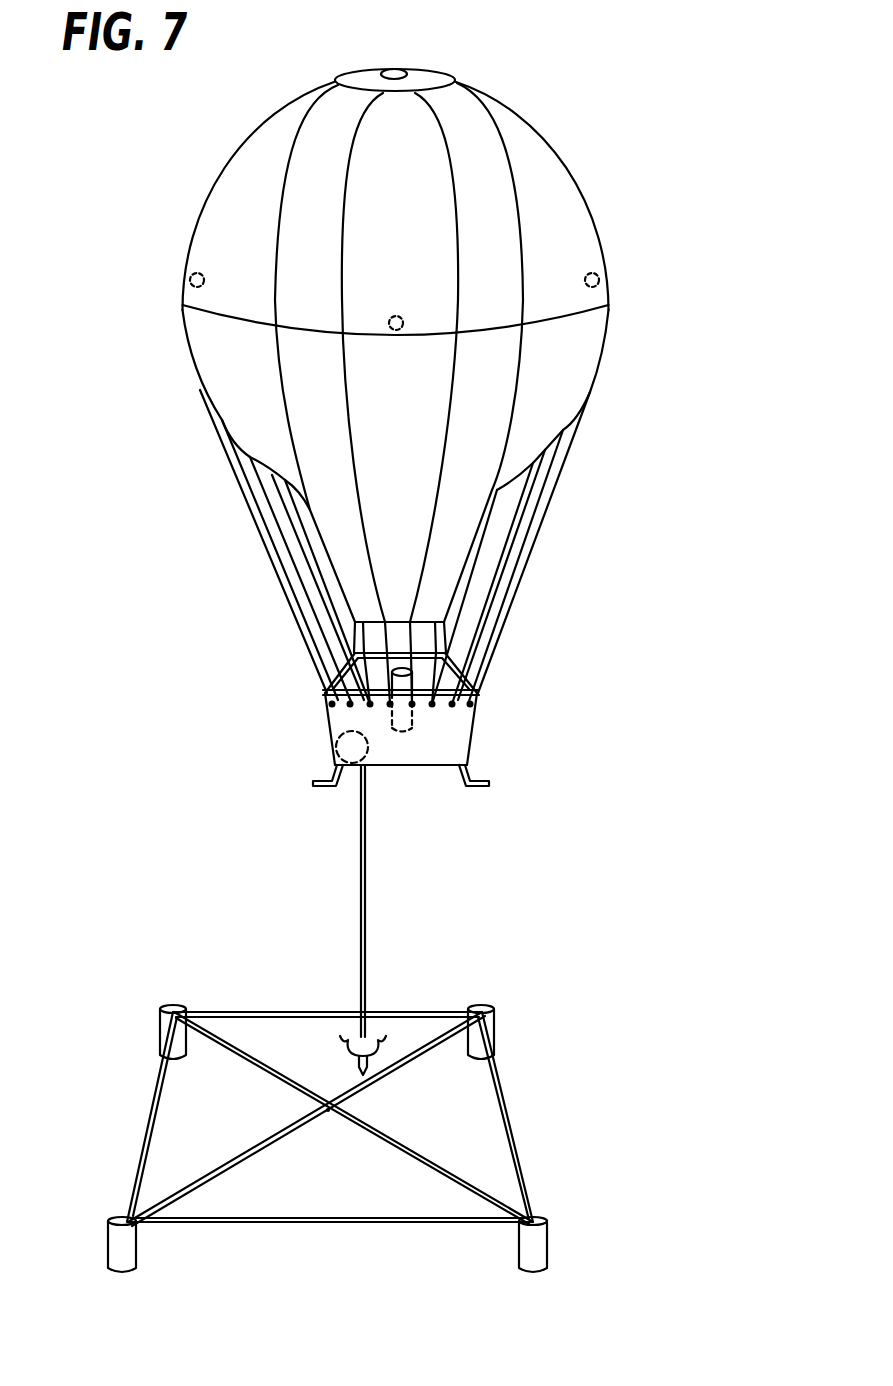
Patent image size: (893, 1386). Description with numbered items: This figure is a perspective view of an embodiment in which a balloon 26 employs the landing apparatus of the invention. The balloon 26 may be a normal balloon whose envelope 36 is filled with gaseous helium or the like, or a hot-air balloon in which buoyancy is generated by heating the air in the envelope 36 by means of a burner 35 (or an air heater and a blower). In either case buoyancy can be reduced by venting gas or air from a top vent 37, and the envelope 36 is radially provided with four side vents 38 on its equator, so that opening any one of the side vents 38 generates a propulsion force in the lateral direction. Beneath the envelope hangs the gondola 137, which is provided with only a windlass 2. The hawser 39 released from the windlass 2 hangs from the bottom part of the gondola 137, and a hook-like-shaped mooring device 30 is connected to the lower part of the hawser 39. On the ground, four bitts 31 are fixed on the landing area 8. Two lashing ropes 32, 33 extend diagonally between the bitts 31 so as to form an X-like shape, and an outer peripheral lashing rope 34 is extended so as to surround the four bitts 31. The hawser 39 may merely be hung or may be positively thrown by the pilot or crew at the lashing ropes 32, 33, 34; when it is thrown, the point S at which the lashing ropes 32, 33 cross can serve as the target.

The windlass 2 is at (334, 747).
The landing area 8 is at (557, 1130).
The balloon 26 is at (581, 478).
The mooring device 30 is at (353, 1037).
The bitts 31 is at (160, 1030).
The lashing rope 32 is at (225, 1050).
The lashing rope 33 is at (405, 1143).
The outer peripheral lashing rope 34 is at (530, 1185).
The burner 35 is at (410, 682).
The envelope 36 is at (545, 168).
The top vent 37 is at (400, 68).
The side vents 38 is at (185, 286).
The hawser 39 is at (366, 965).
The gondola 137 is at (472, 741).
The point S is at (328, 1114).